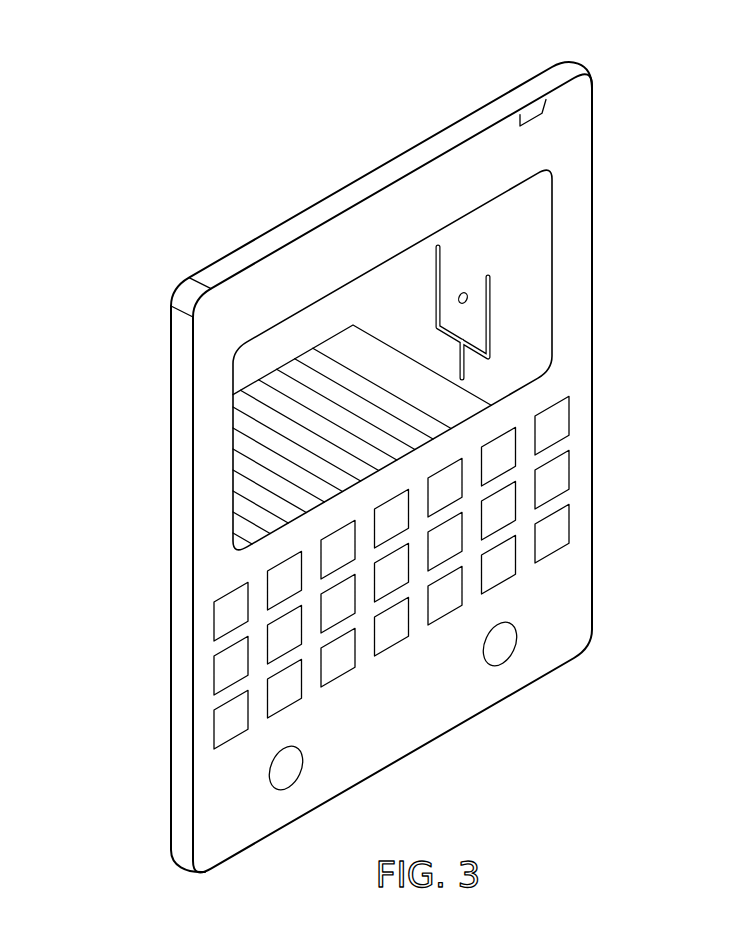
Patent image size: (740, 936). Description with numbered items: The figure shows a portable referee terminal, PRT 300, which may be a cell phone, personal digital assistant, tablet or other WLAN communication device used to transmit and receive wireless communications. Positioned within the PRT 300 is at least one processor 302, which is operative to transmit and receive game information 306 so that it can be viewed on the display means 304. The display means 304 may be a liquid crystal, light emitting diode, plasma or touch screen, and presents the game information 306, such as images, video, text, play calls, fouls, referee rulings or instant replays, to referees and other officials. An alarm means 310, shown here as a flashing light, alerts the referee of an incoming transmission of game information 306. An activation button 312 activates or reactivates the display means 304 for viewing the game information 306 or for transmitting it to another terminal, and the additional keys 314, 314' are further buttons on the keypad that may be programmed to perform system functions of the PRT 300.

The PRT 300 is at (123, 449).
The processor 302 is at (596, 80).
The display means 304 is at (530, 280).
The game information 306 is at (243, 507).
The alarm means 310 is at (533, 108).
The activation button 312 is at (562, 412).
The key 314 is at (157, 631).
The key 314' is at (163, 738).